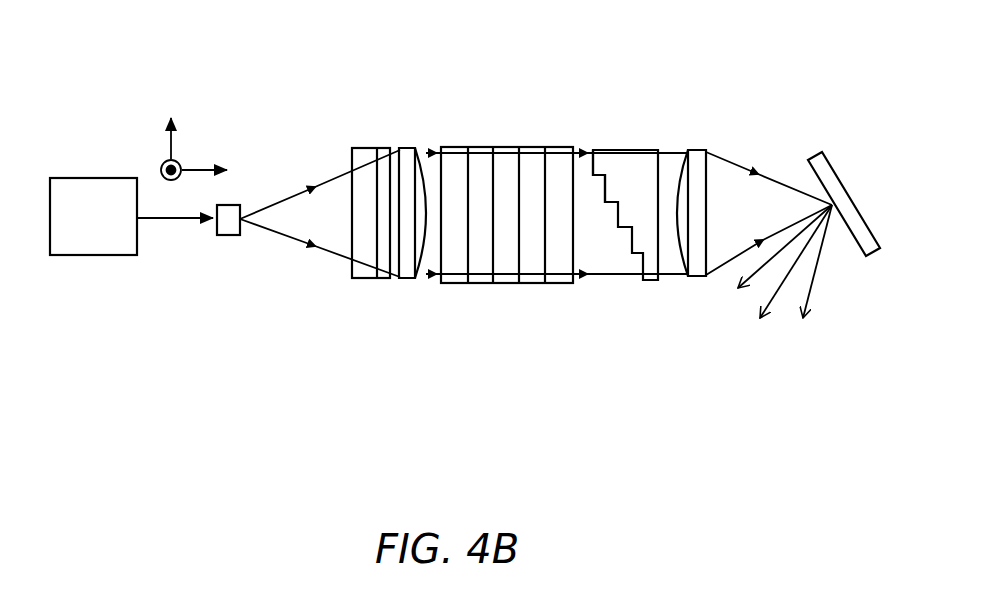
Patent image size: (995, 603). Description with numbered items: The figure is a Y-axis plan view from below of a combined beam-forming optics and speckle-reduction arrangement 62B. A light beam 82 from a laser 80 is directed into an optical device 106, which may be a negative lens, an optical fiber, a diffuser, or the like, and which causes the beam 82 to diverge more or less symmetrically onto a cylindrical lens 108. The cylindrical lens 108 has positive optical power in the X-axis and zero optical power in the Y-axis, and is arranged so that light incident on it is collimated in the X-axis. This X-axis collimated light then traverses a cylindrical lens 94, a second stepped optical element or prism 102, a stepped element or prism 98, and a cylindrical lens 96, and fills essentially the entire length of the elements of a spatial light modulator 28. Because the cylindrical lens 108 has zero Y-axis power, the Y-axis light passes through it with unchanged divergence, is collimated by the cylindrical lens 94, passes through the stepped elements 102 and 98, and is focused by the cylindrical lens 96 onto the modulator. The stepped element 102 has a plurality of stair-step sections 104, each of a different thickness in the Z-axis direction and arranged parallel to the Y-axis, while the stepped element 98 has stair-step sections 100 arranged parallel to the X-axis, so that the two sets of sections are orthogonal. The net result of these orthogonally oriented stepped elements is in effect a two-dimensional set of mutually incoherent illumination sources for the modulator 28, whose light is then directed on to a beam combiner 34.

The combined beam-forming optics and speckle-reduction arrangement 62B is at (587, 438).
The laser 80 is at (83, 256).
The light beam 82 is at (167, 221).
The optical device 106 is at (228, 244).
The cylindrical lens 108 is at (361, 282).
The cylindrical lens 94 is at (406, 282).
The second stepped optical element or prism 102 is at (502, 222).
The stair-step sections 104 is at (510, 160).
The stepped element or prism 98 is at (618, 214).
The stair-step sections 100 is at (608, 185).
The cylindrical lens 96 is at (703, 139).
The spatial light modulator 28 is at (814, 147).
The beam combiner 34 is at (751, 292).